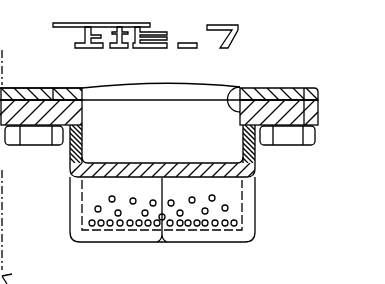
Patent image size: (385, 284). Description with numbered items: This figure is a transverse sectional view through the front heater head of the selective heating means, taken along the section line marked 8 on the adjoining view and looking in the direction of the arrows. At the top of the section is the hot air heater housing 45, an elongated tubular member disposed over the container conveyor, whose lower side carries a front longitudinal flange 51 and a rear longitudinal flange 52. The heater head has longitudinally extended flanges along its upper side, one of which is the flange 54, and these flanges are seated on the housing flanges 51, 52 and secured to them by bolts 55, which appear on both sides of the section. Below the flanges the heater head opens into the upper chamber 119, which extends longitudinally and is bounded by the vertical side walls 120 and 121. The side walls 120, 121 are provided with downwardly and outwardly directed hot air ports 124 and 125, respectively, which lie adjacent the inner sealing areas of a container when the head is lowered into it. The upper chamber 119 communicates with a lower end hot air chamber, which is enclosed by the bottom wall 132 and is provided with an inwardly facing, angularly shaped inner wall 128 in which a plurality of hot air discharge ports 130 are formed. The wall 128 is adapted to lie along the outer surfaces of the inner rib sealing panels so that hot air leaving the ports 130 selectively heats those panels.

The section line 8- 8 is at (2, 65).
The hot air heater housing 45 is at (109, 81).
The front longitudinal flange 51 is at (38, 90).
The rear longitudinal flange 52 is at (273, 90).
The longitudinally extended flange 54 is at (320, 100).
The bolt 55 is at (33, 138).
The upper chamber 119 is at (226, 87).
The vertical side wall 120 is at (75, 120).
The vertical side wall 121 is at (257, 168).
The hot air port 124 is at (78, 146).
The hot air port 125 is at (242, 142).
The inner wall 128 is at (187, 216).
The hot air discharge port 130 is at (143, 217).
The bottom wall 132 is at (230, 244).